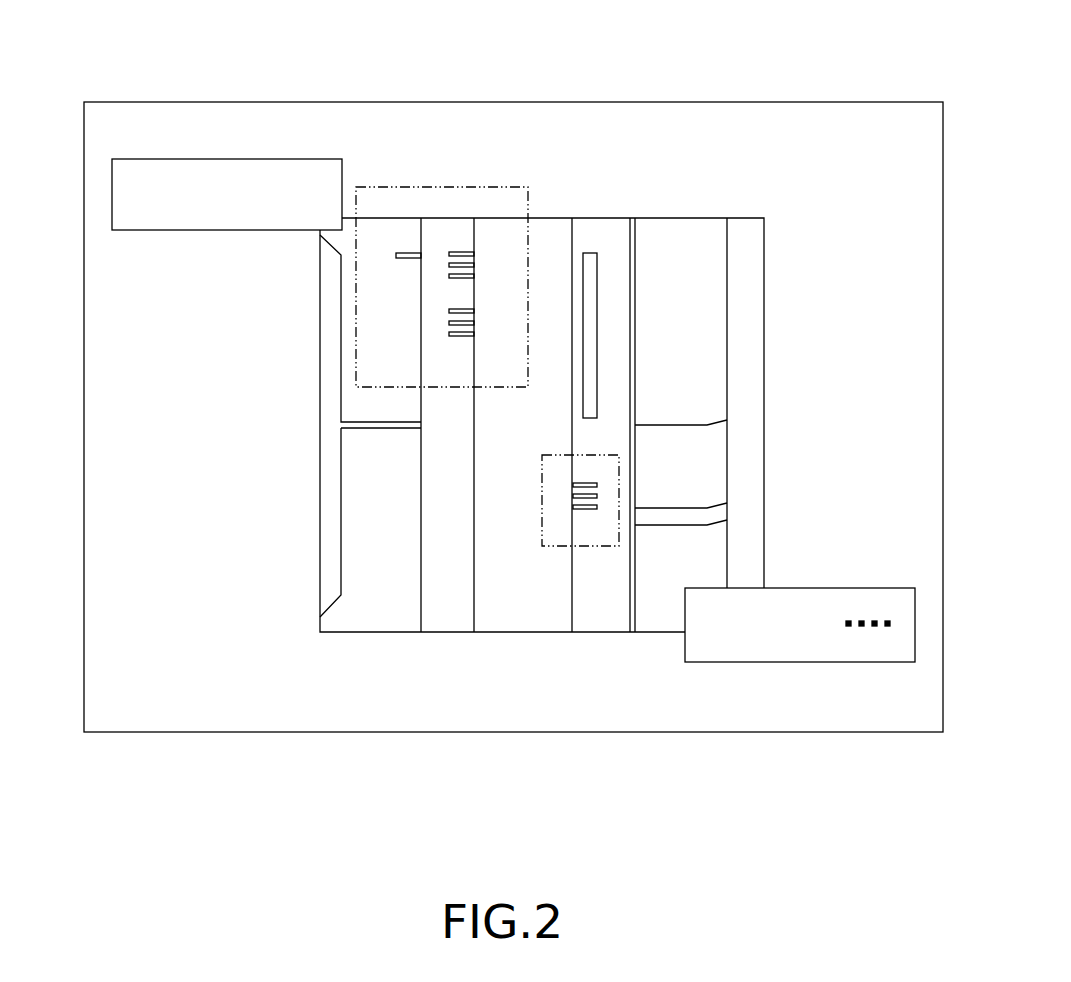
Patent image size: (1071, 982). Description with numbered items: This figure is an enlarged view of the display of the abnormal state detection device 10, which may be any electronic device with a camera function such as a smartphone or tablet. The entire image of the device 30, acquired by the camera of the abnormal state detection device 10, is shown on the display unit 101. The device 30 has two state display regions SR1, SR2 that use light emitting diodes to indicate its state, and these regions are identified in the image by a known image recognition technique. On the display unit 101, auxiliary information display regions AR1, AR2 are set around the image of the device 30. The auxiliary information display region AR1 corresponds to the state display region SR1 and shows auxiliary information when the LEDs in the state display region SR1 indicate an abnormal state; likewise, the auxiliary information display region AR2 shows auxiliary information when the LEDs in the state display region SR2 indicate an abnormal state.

The abnormal state detection device 10 is at (513, 400).
The display unit 101 is at (222, 722).
The device 30 is at (756, 229).
The auxiliary information display region AR1 is at (282, 159).
The auxiliary information display region AR2 is at (815, 662).
The state display region SR1 is at (442, 187).
The state display region SR2 is at (598, 547).